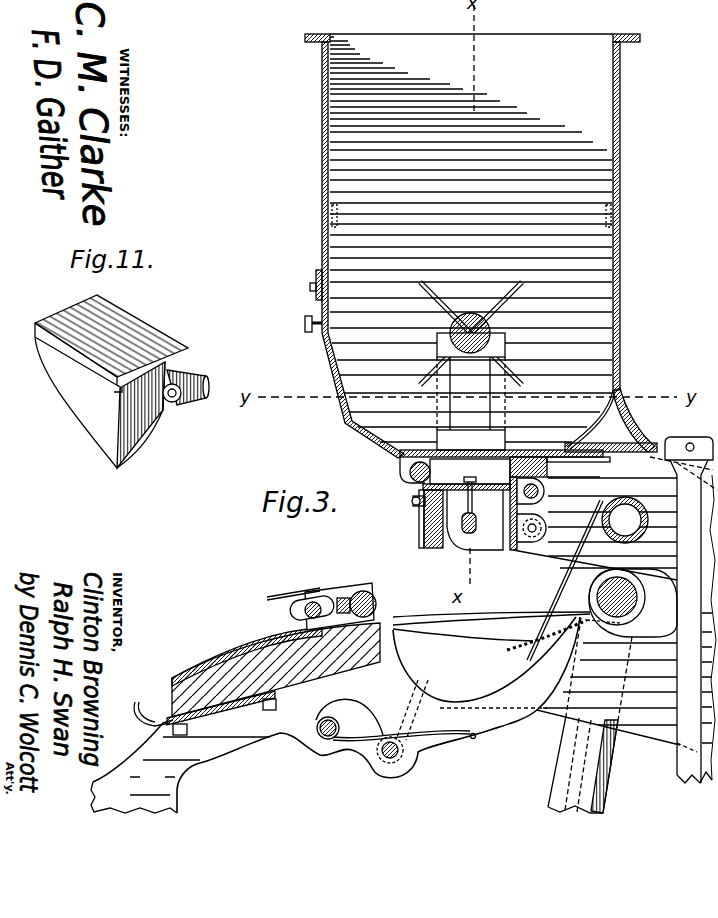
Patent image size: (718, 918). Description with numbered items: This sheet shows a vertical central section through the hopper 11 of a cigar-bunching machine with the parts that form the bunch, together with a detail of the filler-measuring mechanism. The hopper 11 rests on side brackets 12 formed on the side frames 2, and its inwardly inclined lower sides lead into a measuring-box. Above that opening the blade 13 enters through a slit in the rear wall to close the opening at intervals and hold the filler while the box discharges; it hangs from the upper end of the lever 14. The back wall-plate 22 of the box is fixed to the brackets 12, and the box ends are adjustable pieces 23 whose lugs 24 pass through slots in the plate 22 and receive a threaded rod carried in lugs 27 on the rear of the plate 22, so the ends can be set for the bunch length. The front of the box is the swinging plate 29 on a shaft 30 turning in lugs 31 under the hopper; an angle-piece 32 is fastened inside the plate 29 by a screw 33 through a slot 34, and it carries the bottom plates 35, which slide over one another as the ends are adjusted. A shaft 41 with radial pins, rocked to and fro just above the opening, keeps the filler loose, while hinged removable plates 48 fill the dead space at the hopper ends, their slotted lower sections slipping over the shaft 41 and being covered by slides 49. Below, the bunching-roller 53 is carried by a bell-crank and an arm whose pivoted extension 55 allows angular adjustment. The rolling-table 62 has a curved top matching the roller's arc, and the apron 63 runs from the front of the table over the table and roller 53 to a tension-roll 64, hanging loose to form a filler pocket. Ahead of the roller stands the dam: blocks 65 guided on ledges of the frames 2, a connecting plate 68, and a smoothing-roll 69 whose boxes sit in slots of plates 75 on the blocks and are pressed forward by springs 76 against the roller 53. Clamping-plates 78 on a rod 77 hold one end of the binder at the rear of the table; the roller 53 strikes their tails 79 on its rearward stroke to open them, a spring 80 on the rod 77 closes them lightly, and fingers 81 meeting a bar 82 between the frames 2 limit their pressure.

In FIG. 3, the side frames 2 is at (394, 747).
In FIG. 3, the hopper 11 is at (622, 236).
In FIG. 3, the side brackets 12 is at (558, 515).
In FIG. 3, the blade 13 is at (592, 445).
In FIG. 3, the lever 14 is at (690, 610).
In FIG. 3, the back wall-plate 22 is at (547, 523).
In FIG. 11, the adjustable end pieces 23 is at (111, 381).
In FIG. 11, the lugs 24 is at (195, 375).
In FIG. 3, the lugs 27 is at (546, 490).
In FIG. 3, the swinging plate 29 is at (424, 521).
In FIG. 3, the shaft 30 is at (409, 472).
In FIG. 3, the lugs 31 is at (400, 461).
In FIG. 3, the angle-piece 32 is at (445, 550).
In FIG. 3, the screw 33 is at (413, 500).
In FIG. 3, the slot 34 is at (412, 541).
In FIG. 3, the plates 35 is at (466, 504).
In FIG. 3, the shaft 41 is at (470, 313).
In FIG. 3, the removable plates 48 is at (471, 239).
In FIG. 3, the slides 49 is at (471, 403).
In FIG. 3, the bunching-roller 53 is at (645, 606).
In FIG. 3, the extension 55 is at (598, 770).
In FIG. 3, the rolling-table 62 is at (273, 679).
In FIG. 3, the apron 63 is at (572, 597).
In FIG. 3, the tension-roll 64 is at (648, 535).
In FIG. 3, the blocks 65 is at (380, 588).
In FIG. 3, the plate 68 is at (293, 585).
In FIG. 3, the smoothing-roll 69 is at (377, 607).
In FIG. 3, the plates 75 is at (300, 610).
In FIG. 3, the springs 76 is at (344, 598).
In FIG. 3, the rod 77 is at (403, 768).
In FIG. 3, the clamping-plates 78 is at (496, 673).
In FIG. 3, the tails 79 is at (590, 645).
In FIG. 3, the spring 80 is at (471, 710).
In FIG. 3, the fingers 81 is at (373, 733).
In FIG. 3, the bar 82 is at (317, 728).